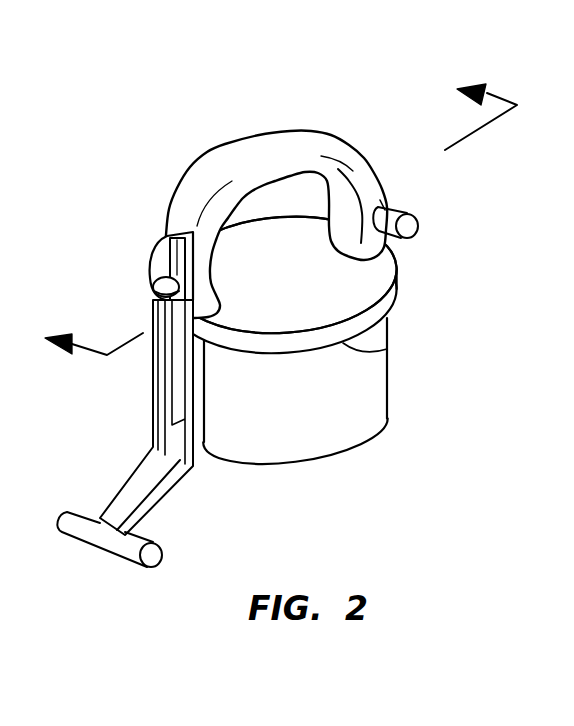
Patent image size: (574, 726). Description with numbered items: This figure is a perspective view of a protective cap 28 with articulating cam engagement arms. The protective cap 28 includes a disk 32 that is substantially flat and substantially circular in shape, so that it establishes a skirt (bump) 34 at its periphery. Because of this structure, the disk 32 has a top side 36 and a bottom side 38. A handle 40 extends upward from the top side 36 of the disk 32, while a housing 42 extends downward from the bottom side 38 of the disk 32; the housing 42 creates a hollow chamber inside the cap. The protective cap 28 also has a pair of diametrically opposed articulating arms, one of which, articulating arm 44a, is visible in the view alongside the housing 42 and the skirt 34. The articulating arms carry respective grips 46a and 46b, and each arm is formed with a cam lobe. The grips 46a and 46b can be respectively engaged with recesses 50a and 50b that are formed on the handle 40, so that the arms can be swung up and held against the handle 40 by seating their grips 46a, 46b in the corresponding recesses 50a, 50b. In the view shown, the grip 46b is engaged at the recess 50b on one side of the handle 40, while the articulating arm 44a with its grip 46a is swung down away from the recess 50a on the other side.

The protective cap 28 is at (171, 168).
The disk 32 is at (297, 287).
The skirt (bump) 34 is at (388, 311).
The top side 36 is at (355, 281).
The bottom side 38 is at (387, 350).
The handle 40 is at (270, 155).
The housing 42 is at (330, 438).
The articulating arm 44a is at (157, 492).
The grip 46a is at (110, 543).
The grip 46b is at (418, 222).
The recess 50a is at (159, 285).
The recess 50b is at (383, 205).